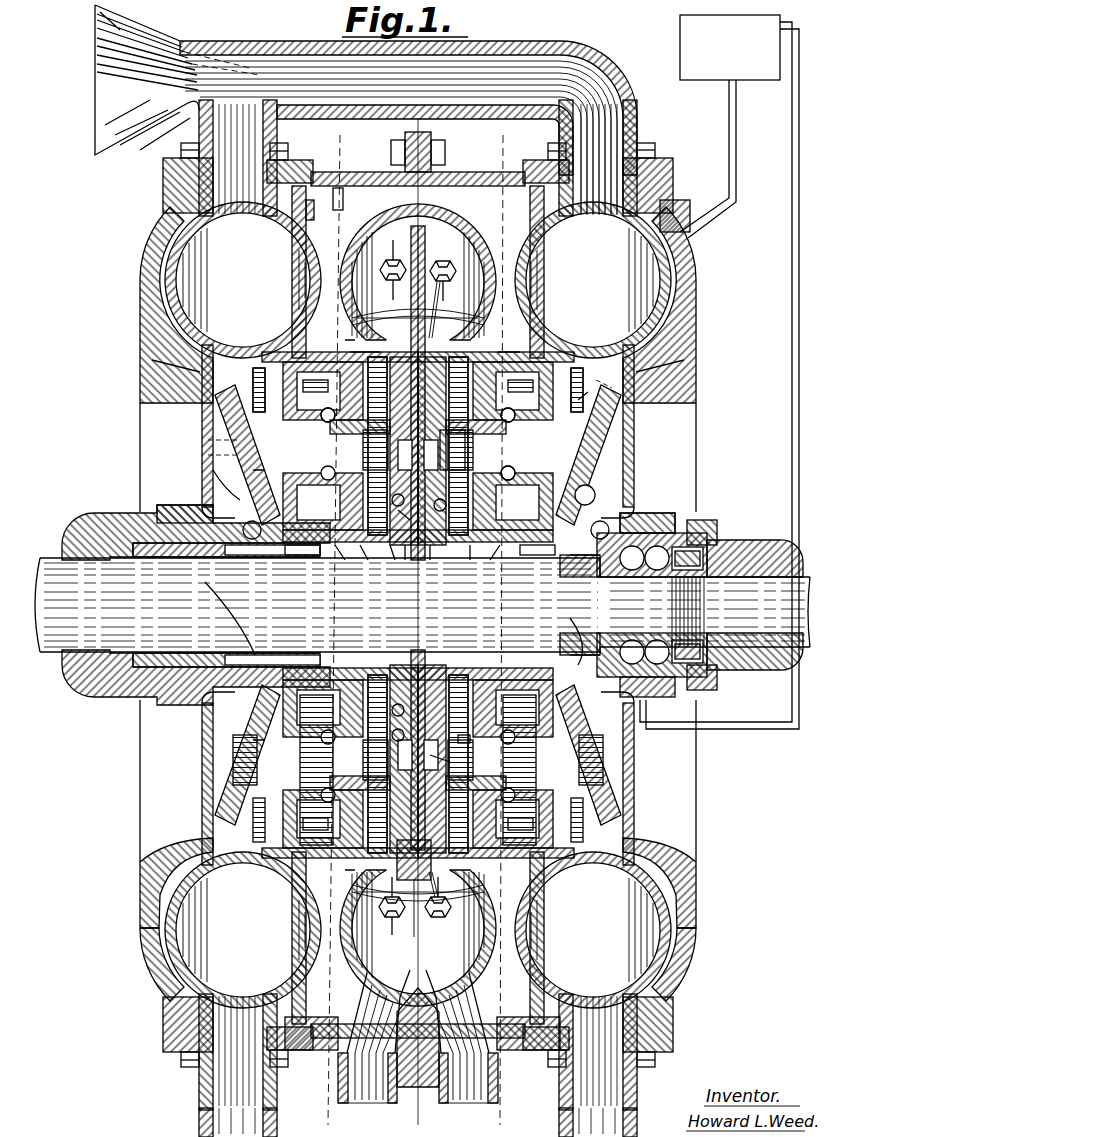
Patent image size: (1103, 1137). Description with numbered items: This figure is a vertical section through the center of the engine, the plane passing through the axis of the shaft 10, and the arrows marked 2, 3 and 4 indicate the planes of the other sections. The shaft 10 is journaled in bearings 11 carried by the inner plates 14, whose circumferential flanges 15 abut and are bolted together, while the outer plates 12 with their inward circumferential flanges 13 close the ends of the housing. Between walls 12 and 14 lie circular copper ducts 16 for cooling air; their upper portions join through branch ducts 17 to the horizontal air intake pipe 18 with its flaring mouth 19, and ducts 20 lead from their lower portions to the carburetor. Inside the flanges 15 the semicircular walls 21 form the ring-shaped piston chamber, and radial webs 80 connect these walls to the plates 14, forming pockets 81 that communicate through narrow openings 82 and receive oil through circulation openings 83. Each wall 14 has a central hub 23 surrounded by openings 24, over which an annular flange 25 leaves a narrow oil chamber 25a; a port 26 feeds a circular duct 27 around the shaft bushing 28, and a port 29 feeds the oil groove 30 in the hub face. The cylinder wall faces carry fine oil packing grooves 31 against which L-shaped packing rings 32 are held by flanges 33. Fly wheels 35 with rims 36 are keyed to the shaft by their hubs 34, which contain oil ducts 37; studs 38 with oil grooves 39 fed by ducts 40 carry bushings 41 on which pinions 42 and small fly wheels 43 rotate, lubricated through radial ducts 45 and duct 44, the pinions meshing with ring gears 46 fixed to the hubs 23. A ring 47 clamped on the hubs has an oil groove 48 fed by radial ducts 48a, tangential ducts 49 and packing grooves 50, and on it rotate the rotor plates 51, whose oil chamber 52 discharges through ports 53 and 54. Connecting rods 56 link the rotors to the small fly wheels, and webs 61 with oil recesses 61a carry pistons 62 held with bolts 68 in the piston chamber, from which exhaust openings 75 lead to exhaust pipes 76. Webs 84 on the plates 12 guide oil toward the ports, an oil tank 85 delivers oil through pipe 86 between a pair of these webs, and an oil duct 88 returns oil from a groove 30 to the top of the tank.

The section line 2- 2 is at (324, 128).
The section line 3- 3 is at (503, 138).
The section line 4- 4 is at (410, 131).
The shaft 10 is at (60, 632).
The bearings 11 is at (700, 522).
The plates 12 is at (204, 462).
The circumferential flanges 13 is at (662, 170).
The plates 14 is at (528, 222).
The circumferential flanges 15 is at (356, 172).
The circular ducts 16 is at (178, 288).
The branch ducts 17 is at (205, 135).
The air intake pipe 18 is at (246, 47).
The flaring mouth 19 is at (93, 80).
The ducts 20 is at (199, 1100).
The circumferential walls 21 is at (393, 220).
The hub 23 is at (605, 520).
The openings 24 is at (233, 752).
The annular flange 25 is at (612, 420).
The oil circulation chamber 25a is at (606, 436).
The port 26 is at (180, 510).
The circular duct 27 is at (385, 618).
The bushing 28 is at (178, 558).
The port 29 is at (208, 478).
The oil circulation groove 30 is at (590, 495).
The oil packing grooves 31 is at (440, 295).
The packing rings 32 is at (345, 340).
The flanges 33 is at (350, 354).
The hub portions 34 is at (366, 572).
The fly wheels 35 is at (195, 370).
The circumferential flanges or rims 36 is at (290, 348).
The oil ducts 37 is at (394, 575).
The studs or wrist pins 38 is at (598, 386).
The circumferential oil groove 39 is at (550, 405).
The duct 40 is at (590, 392).
The bushing 41 is at (256, 392).
The pinion 42 is at (262, 346).
The small fly wheel 43 is at (340, 562).
The circumferential oil duct 44 is at (258, 372).
The radial ducts 45 is at (528, 366).
The ring gears 46 is at (300, 557).
The ring 47 is at (398, 517).
The circumferential oil groove 48 is at (410, 562).
The radial ducts 48a is at (432, 562).
The tangentially disposed ducts 49 is at (472, 562).
The oil packing grooves 50 is at (392, 500).
The ring-shaped plates 51 is at (480, 742).
The oil circulation chamber 52 is at (458, 450).
The ports 53 is at (455, 766).
The ports 54 is at (410, 316).
The connecting rod 56 is at (452, 512).
The webs 61 is at (392, 282).
The recesses 61a is at (443, 283).
The piston 62 is at (432, 248).
The bolts 68 is at (398, 258).
The openings 75 is at (440, 990).
The exhaust pipes 76 is at (340, 1080).
The radial webs or walls 80 is at (338, 188).
The pockets 81 is at (306, 210).
The narrow openings 82 is at (430, 150).
The oil circulation openings 83 is at (325, 1008).
The webs 84 is at (165, 322).
The oil supply and storage tank 85 is at (680, 40).
The oil delivery pipe 86 is at (733, 192).
The oil duct 88 is at (792, 236).